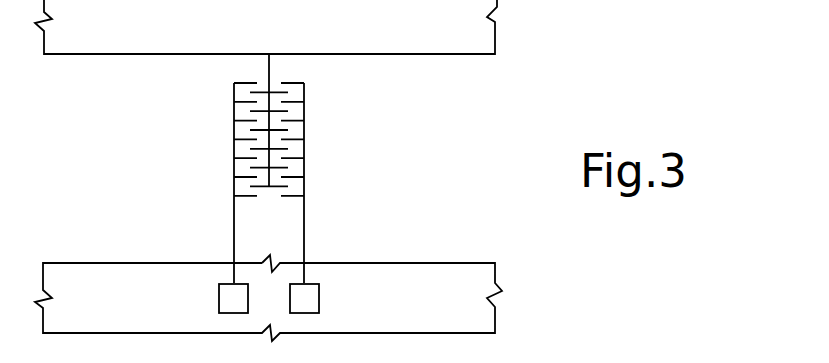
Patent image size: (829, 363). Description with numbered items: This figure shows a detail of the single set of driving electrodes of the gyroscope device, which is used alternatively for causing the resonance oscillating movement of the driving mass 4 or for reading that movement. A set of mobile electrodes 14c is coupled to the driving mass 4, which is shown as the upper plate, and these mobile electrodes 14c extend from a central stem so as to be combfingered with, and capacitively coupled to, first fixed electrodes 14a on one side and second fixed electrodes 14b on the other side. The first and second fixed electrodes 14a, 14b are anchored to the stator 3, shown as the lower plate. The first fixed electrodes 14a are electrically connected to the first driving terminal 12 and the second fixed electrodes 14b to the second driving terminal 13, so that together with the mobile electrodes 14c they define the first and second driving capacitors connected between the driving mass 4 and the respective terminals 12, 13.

The stator 3 is at (447, 283).
The driving mass 4 is at (432, 43).
The first driving terminal 12 is at (220, 302).
The second driving terminal 13 is at (312, 298).
The first fixed electrodes 14a is at (237, 121).
The second fixed electrodes 14b is at (305, 88).
The mobile electrodes 14c is at (258, 190).